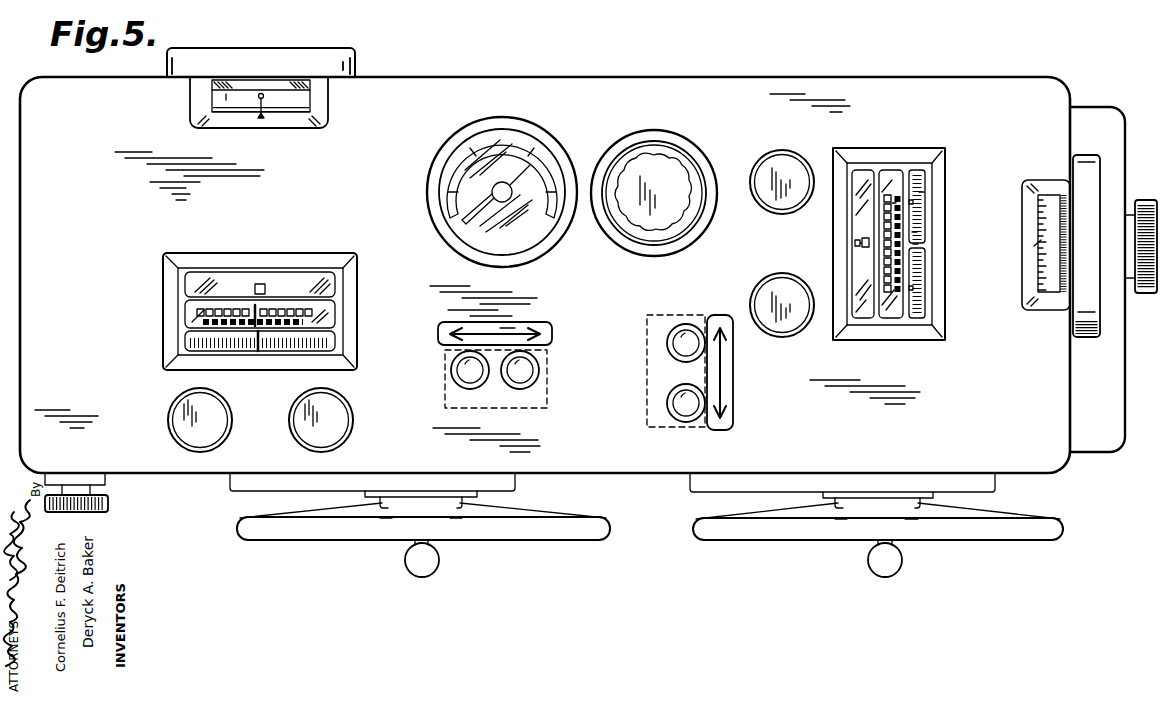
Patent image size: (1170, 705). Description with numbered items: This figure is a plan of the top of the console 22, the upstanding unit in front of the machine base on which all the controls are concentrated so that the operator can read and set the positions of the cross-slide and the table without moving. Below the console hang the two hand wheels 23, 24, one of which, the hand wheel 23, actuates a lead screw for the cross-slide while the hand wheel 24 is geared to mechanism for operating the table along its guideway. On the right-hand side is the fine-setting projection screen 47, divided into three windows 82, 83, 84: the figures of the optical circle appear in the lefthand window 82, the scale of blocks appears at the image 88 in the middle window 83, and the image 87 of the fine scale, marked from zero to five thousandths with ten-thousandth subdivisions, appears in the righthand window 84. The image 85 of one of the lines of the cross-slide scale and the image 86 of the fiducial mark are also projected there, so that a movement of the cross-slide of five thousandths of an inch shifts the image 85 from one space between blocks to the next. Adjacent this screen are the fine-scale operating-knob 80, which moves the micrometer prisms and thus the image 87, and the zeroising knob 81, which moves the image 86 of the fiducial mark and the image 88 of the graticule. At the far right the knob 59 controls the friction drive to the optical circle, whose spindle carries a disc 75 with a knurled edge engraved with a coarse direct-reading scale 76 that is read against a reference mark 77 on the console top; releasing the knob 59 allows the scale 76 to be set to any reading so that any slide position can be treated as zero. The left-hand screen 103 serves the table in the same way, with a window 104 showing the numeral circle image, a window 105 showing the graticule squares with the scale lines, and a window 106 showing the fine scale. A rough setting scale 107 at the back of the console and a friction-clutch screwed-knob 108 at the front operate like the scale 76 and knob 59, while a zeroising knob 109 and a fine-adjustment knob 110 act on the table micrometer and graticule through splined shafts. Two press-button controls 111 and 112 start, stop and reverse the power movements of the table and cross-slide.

The console 22 is at (1030, 468).
The hand wheel 23 is at (705, 526).
The hand wheel 24 is at (558, 526).
The screen 47 is at (910, 242).
The knob 59 is at (1146, 296).
The disc 75 is at (1083, 338).
The coarse direct-reading scale 76 is at (1048, 197).
The reference mark 77 is at (1033, 253).
The fine-scale operating-knob 80 is at (773, 158).
The zeroising knob 81 is at (782, 281).
The lefthand window 82 is at (864, 310).
The middle window 83 is at (898, 312).
The righthand window 84 is at (924, 278).
The image of scale line 85 is at (913, 232).
The image of fiducial mark 86 is at (915, 245).
The image of fine scale 87 is at (921, 191).
The image of scale of blocks 88 is at (894, 204).
The screen 103 is at (228, 295).
The window 104 is at (188, 291).
The window 105 is at (186, 318).
The window 106 is at (186, 346).
The rough setting scale 107 is at (305, 97).
The friction-clutch screwed-knob 108 is at (110, 500).
The zeroising knob 109 is at (180, 427).
The fine-adjustment knob 110 is at (303, 422).
The press-button control 111 is at (520, 400).
The press-button control 112 is at (650, 358).